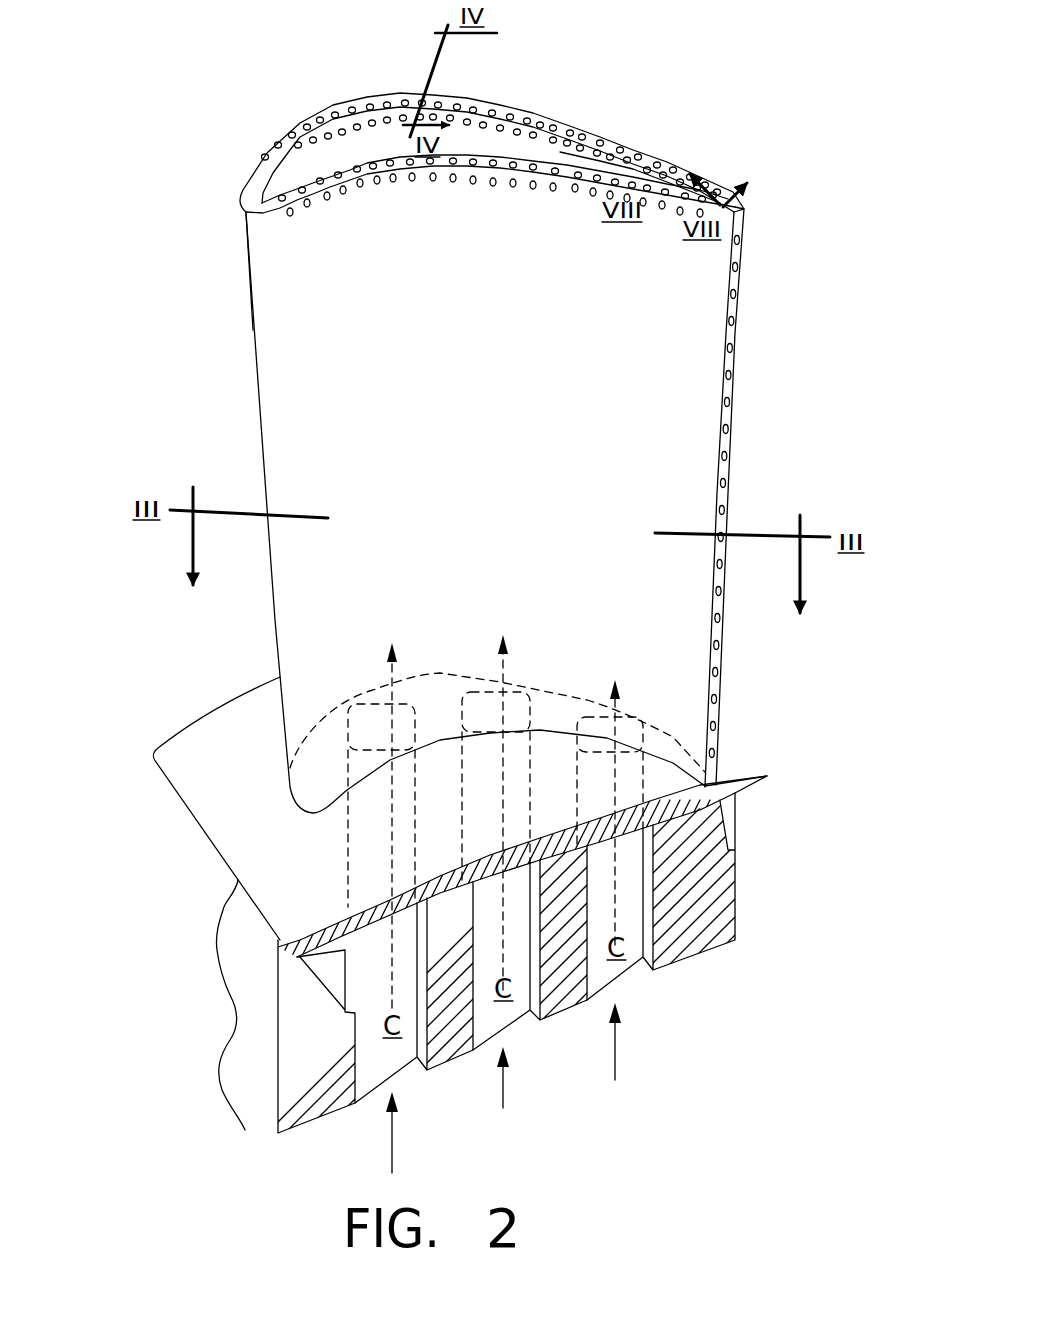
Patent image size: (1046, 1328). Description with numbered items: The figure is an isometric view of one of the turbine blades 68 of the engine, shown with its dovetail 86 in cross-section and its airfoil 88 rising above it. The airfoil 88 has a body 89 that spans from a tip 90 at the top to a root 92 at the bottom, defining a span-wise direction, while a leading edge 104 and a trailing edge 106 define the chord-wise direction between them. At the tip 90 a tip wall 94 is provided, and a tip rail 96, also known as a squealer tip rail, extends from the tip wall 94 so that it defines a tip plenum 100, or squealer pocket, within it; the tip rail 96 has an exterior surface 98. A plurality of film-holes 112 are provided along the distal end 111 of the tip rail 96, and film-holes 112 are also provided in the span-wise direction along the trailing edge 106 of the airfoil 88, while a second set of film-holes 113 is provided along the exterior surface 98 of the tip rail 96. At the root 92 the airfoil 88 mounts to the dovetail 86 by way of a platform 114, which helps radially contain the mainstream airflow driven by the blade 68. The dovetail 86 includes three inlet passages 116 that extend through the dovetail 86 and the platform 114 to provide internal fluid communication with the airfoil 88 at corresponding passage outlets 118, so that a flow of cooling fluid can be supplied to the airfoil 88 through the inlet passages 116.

The turbine blade 68 is at (96, 162).
The dovetail 86 is at (256, 993).
The airfoil 88 is at (226, 401).
The body 89 is at (282, 307).
The tip 90 is at (756, 190).
The root 92 is at (672, 759).
The tip wall 94 is at (533, 153).
The tip rail 96 is at (405, 100).
The exterior surface 98 is at (285, 150).
The tip plenum 100 is at (588, 146).
The leading edge 104 is at (243, 262).
The trailing edge 106 is at (738, 392).
The distal end 111 is at (664, 186).
The film-holes 112 is at (347, 106).
The second set of film-holes 113 is at (530, 138).
The platform 114 is at (203, 722).
The inlet passage 116 is at (635, 1068).
The passage outlets 118 is at (368, 703).